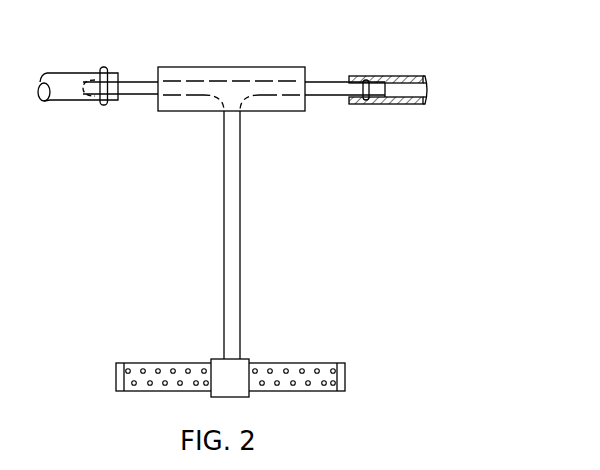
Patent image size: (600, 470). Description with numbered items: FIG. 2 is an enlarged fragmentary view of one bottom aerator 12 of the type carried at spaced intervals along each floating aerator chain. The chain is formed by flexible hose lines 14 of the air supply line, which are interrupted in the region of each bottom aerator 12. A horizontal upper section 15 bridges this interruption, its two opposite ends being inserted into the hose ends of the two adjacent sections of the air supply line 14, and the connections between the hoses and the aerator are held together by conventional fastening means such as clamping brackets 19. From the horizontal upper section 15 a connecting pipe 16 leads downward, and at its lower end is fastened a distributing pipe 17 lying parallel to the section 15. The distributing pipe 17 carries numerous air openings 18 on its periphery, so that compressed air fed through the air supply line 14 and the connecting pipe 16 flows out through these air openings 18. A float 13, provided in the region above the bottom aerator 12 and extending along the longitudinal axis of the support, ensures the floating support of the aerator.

The bottom aerator 12 is at (271, 129).
The float 13 is at (278, 75).
The flexible hose line 14 is at (58, 75).
The horizontal upper section 15 is at (330, 80).
The connecting pipe 16 is at (227, 208).
The distributing pipe 17 is at (289, 361).
The air openings 18 is at (158, 369).
The clamping bracket 19 is at (104, 67).